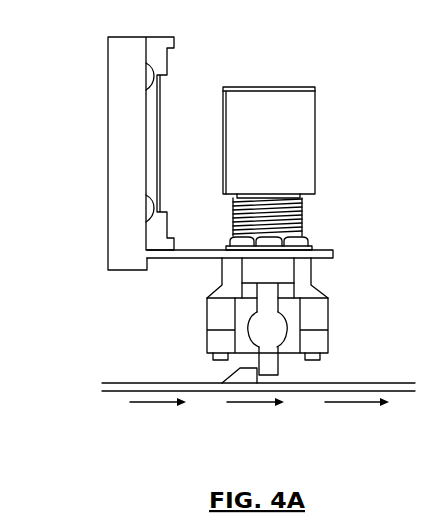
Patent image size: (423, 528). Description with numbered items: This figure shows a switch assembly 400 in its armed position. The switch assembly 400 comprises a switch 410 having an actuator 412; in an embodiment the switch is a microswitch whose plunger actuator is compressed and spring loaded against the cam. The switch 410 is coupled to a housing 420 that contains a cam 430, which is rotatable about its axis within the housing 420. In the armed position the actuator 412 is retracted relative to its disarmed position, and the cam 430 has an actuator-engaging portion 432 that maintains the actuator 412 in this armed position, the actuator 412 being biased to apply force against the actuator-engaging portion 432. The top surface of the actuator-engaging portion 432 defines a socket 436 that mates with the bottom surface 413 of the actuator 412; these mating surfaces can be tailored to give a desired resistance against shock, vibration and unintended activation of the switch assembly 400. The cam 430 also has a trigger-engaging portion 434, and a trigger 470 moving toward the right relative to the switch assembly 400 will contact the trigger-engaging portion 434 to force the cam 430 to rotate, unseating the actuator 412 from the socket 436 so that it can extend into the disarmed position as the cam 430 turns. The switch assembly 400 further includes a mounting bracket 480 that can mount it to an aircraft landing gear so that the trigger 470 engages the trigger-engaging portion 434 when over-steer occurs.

The switch assembly 400 is at (268, 64).
The switch 410 is at (269, 142).
The actuator 412 is at (240, 302).
The bottom surface 413 is at (242, 320).
The housing 420 is at (315, 297).
The cam 430 is at (246, 339).
The actuator-engaging portion 432 is at (286, 316).
The trigger-engaging portion 434 is at (280, 369).
The socket 436 is at (305, 304).
The trigger 470 is at (233, 373).
The mounting bracket 480 is at (106, 147).